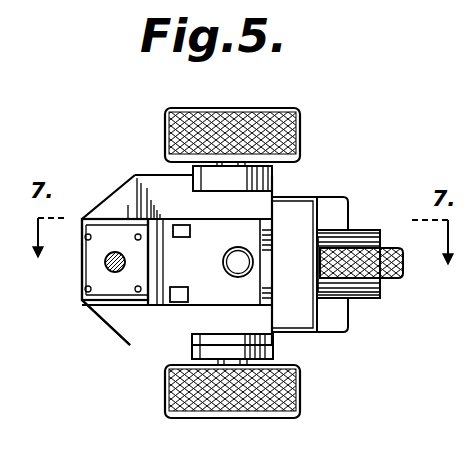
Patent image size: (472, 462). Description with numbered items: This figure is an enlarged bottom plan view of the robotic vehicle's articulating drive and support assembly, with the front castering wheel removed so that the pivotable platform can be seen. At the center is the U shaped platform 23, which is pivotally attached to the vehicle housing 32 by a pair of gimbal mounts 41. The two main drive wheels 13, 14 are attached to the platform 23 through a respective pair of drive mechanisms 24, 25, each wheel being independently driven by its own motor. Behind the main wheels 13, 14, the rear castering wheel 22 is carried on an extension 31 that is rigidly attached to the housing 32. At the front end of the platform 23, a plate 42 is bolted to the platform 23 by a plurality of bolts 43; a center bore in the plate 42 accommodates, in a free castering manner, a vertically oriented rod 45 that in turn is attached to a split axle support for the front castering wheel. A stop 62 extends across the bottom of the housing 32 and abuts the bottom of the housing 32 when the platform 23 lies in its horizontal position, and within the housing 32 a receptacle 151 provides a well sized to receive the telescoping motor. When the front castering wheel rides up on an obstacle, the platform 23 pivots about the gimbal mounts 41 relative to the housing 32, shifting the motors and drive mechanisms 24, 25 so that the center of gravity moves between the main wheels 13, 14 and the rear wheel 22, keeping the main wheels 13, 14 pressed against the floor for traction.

The main drive wheel 13 is at (165, 410).
The main drive wheel 14 is at (297, 110).
The rear castering wheel 22 is at (398, 288).
The U shaped platform 23 is at (106, 322).
The drive mechanism 24 is at (274, 349).
The drive mechanism 25 is at (273, 177).
The extension 31 is at (367, 233).
The vehicle housing 32 is at (234, 300).
The gimbal mounts 41 is at (197, 223).
The plate 42 is at (81, 283).
The bolts 43 is at (82, 221).
The vertically oriented rod 45 is at (105, 262).
The stop 62 is at (267, 258).
The receptacle 151 is at (243, 250).